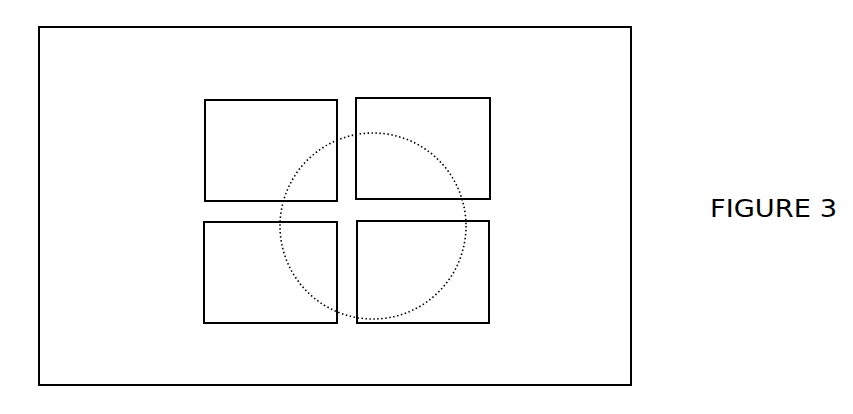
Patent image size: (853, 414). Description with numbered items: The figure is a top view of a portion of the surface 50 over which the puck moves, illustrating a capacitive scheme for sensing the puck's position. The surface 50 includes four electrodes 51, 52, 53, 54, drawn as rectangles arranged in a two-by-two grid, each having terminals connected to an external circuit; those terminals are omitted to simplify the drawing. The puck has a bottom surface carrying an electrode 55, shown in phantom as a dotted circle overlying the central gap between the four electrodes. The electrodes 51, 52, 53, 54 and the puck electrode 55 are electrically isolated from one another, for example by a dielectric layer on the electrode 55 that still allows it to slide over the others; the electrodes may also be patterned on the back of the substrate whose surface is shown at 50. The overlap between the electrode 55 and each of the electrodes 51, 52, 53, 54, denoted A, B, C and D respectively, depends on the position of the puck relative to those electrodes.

The surface 50 is at (627, 92).
The electrode 51 is at (212, 131).
The electrode 52 is at (480, 113).
The electrode 53 is at (212, 295).
The electrode 54 is at (480, 300).
The puck electrode 55 is at (456, 212).